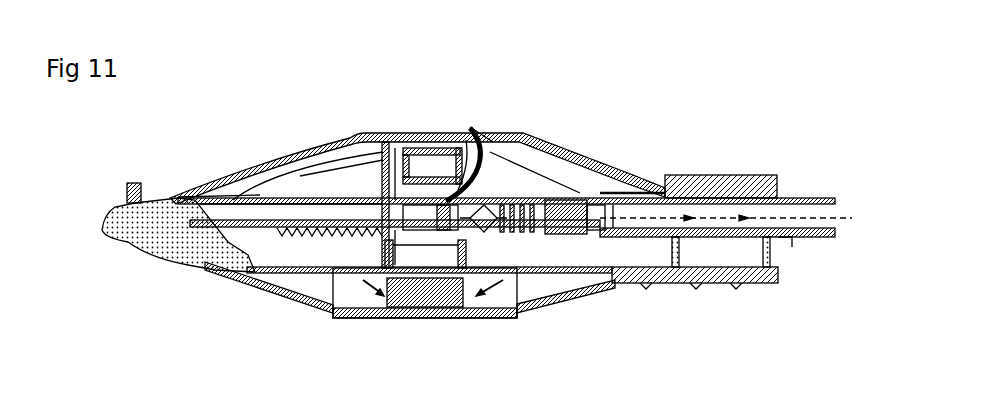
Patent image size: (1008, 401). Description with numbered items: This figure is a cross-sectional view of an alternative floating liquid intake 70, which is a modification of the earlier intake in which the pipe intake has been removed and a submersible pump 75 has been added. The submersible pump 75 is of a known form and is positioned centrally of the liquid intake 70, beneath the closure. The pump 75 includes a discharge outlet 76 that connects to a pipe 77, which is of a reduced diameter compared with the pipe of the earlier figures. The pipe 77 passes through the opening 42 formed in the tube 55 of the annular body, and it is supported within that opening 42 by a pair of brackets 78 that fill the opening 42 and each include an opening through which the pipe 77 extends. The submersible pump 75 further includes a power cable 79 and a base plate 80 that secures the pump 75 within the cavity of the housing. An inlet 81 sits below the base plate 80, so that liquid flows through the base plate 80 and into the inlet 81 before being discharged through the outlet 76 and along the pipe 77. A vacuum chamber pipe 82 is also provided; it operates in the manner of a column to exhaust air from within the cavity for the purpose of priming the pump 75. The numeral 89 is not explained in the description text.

The liquid intake 70 is at (646, 98).
The vacuum chamber pipe 82 is at (320, 138).
The actuator housing 89 is at (408, 130).
The submersible pump 75 is at (493, 140).
The power cable 79 is at (503, 148).
The pipe 77 is at (793, 197).
The base plate 80 is at (300, 300).
The inlet 81 is at (370, 322).
The discharge outlet 76 is at (533, 312).
The brackets 78 is at (648, 290).
The tube 55 is at (767, 290).
The opening 42 is at (792, 247).